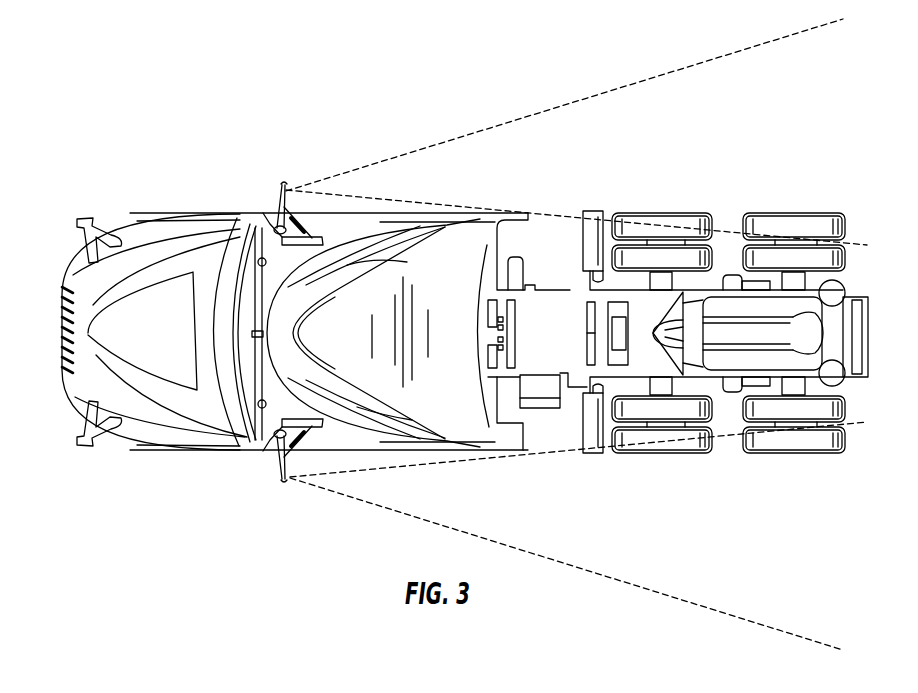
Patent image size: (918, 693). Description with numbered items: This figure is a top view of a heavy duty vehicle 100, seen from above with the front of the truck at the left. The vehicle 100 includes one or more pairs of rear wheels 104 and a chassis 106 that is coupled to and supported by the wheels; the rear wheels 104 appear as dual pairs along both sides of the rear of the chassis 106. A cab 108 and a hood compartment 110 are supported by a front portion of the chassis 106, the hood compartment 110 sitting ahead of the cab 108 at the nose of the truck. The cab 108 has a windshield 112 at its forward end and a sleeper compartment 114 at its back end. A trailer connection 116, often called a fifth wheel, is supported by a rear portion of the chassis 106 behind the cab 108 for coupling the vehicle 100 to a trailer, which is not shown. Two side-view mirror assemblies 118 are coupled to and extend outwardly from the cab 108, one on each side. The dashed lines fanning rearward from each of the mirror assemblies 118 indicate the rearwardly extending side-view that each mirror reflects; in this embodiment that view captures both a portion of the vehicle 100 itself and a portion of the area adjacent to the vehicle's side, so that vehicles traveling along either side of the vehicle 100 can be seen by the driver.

The heavy duty vehicle 100 is at (168, 152).
The rear wheels 104 is at (663, 212).
The chassis 106 is at (545, 409).
The cab 108 is at (378, 242).
The hood compartment 110 is at (163, 257).
The windshield 112 is at (263, 262).
The sleeper compartment 114 is at (468, 248).
The trailer connection 116 is at (652, 313).
The side-view mirror assemblies 118 is at (286, 188).